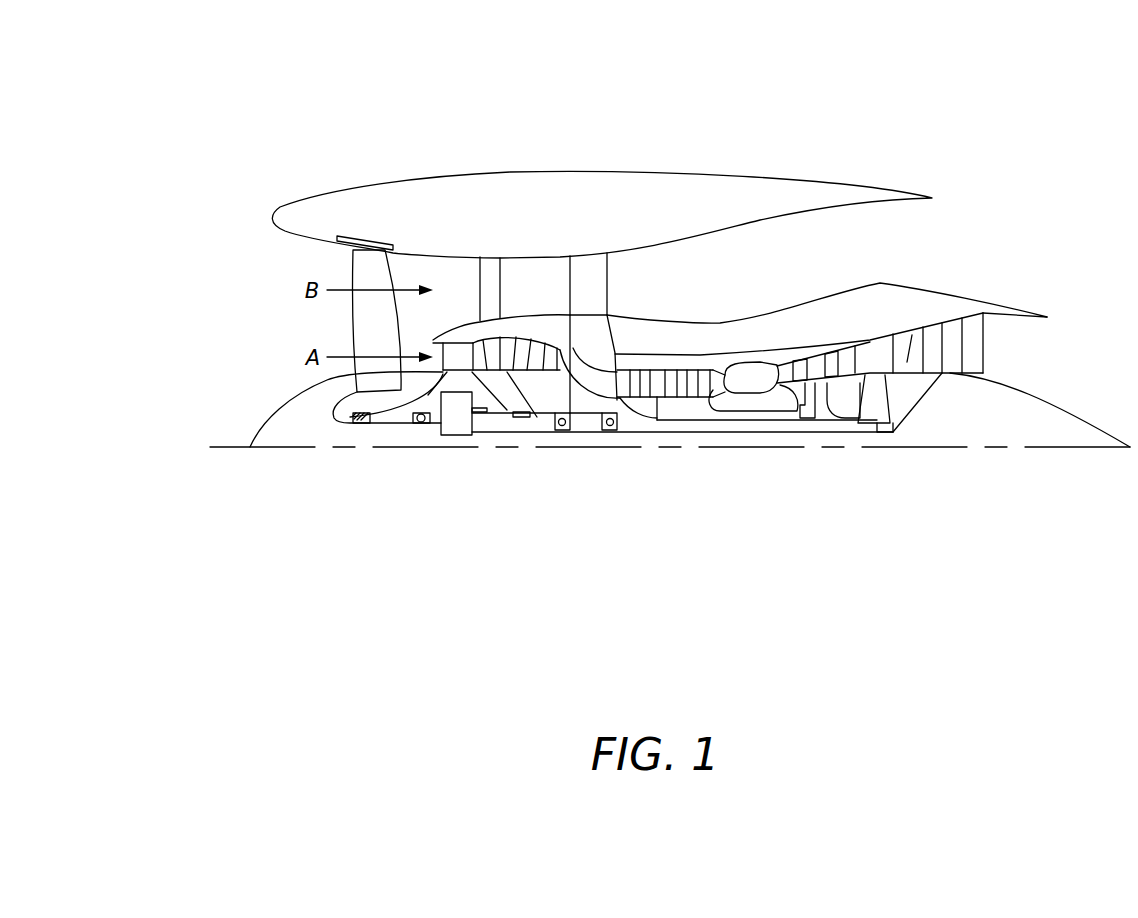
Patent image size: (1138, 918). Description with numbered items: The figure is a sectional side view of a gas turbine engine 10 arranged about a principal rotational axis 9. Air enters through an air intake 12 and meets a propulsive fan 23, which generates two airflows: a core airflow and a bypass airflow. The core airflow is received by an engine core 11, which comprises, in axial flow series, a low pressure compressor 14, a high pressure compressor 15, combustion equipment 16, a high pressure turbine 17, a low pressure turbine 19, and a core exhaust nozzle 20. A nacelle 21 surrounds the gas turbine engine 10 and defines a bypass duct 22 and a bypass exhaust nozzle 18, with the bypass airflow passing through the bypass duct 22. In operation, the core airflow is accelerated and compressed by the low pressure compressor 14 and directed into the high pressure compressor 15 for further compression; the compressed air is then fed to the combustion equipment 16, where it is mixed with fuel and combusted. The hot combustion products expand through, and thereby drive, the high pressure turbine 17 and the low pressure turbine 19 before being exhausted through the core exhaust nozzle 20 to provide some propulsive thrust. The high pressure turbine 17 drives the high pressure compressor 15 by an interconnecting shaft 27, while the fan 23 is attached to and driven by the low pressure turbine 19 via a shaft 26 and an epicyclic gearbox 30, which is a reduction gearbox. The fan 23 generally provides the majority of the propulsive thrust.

The principal rotational axis 9 is at (930, 449).
The gas turbine engine 10 is at (288, 150).
The engine core 11 is at (722, 340).
The air intake 12 is at (296, 268).
The low pressure compressor 14 is at (530, 340).
The high pressure compressor 15 is at (675, 380).
The combustion equipment 16 is at (750, 382).
The high pressure turbine 17 is at (813, 367).
The bypass exhaust nozzle 18 is at (937, 238).
The low pressure turbine 19 is at (952, 330).
The core exhaust nozzle 20 is at (1022, 344).
The nacelle 21 is at (585, 188).
The bypass duct 22 is at (878, 254).
The propulsive fan 23 is at (357, 324).
The shaft 26 is at (672, 433).
The interconnecting shaft 27 is at (710, 428).
The epicyclic gearbox 30 is at (455, 424).